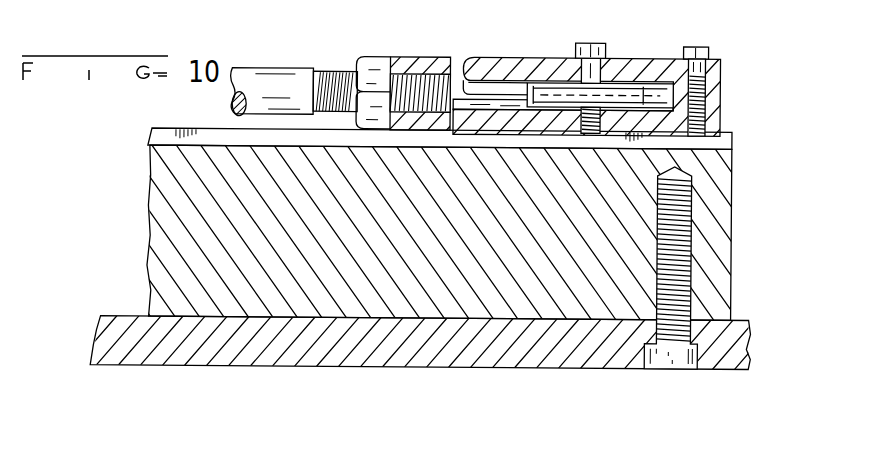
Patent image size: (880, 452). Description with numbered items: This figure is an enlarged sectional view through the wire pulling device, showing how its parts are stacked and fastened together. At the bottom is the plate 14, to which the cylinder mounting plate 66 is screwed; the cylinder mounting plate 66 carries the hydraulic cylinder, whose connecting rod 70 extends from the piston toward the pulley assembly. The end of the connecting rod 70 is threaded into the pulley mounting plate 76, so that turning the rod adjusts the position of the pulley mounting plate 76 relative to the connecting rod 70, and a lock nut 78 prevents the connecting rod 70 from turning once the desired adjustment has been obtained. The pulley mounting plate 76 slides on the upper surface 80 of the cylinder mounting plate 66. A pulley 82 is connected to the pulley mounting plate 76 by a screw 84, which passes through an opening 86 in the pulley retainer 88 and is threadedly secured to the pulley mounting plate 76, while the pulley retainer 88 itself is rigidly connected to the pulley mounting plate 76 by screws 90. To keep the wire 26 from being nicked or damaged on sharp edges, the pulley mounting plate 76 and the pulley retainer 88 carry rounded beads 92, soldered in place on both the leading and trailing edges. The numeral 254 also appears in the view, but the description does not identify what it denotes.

The plate 14 is at (745, 319).
The wire 26 is at (495, 82).
The cylinder mounting plate 66 is at (160, 276).
The connecting rod 70 is at (278, 75).
The pulley mounting plate 76 is at (423, 57).
The lock nut 78 is at (372, 68).
The upper surface 80 is at (173, 128).
The pulley 82 is at (617, 78).
The screw 84 is at (595, 40).
The opening 86 is at (585, 65).
The pulley retainer 88 is at (657, 54).
The screws 90 is at (695, 43).
The rounded beads 92 is at (455, 98).
The clamp assembly 254 is at (318, 0).